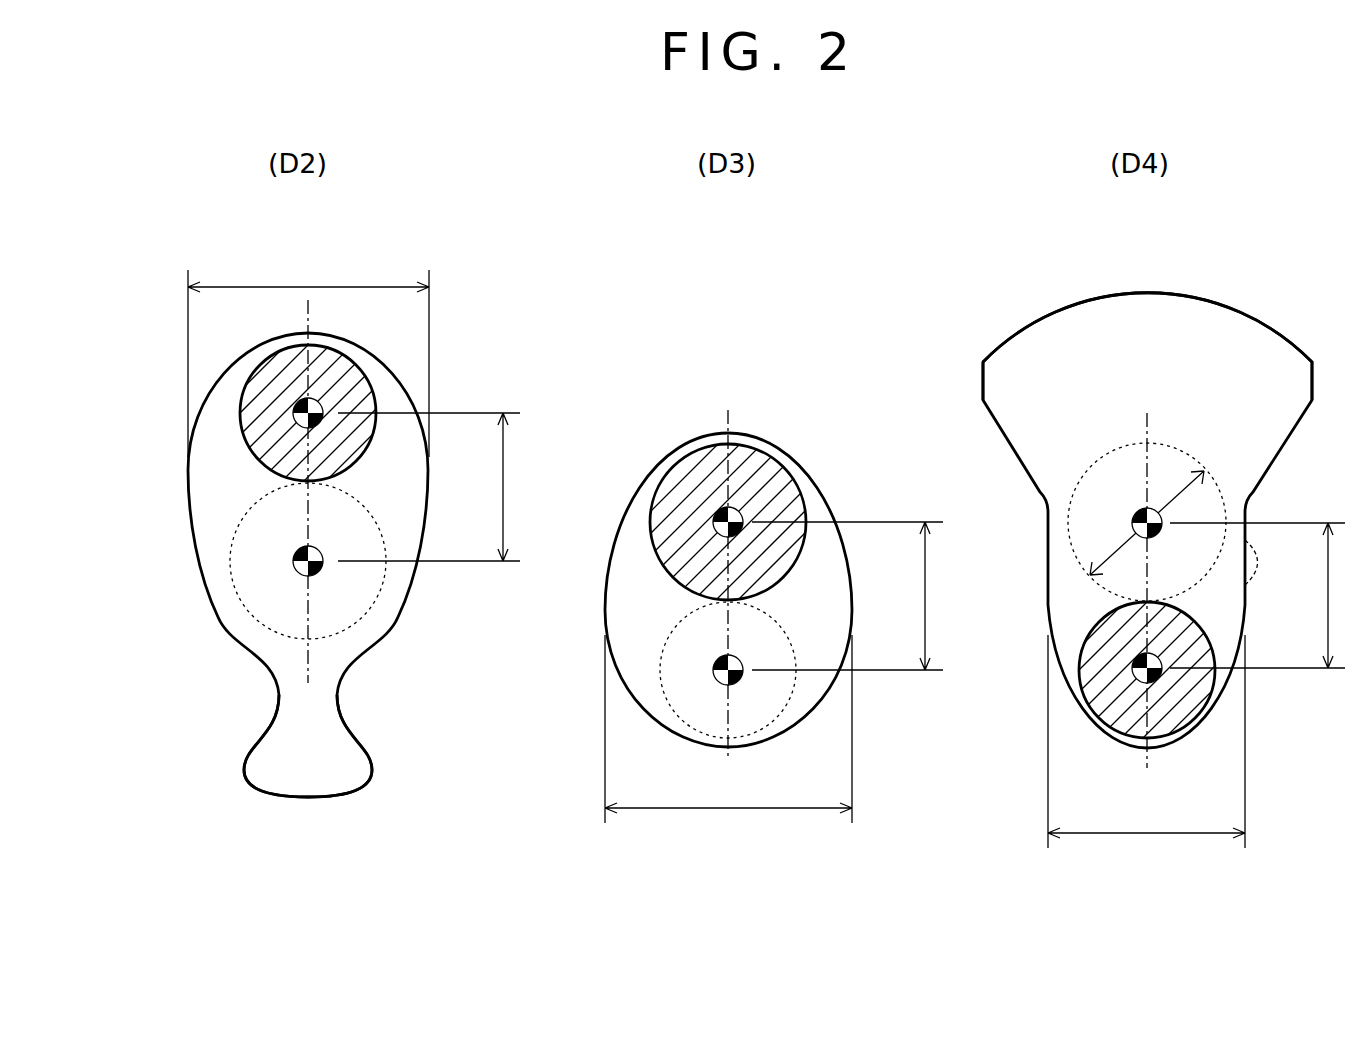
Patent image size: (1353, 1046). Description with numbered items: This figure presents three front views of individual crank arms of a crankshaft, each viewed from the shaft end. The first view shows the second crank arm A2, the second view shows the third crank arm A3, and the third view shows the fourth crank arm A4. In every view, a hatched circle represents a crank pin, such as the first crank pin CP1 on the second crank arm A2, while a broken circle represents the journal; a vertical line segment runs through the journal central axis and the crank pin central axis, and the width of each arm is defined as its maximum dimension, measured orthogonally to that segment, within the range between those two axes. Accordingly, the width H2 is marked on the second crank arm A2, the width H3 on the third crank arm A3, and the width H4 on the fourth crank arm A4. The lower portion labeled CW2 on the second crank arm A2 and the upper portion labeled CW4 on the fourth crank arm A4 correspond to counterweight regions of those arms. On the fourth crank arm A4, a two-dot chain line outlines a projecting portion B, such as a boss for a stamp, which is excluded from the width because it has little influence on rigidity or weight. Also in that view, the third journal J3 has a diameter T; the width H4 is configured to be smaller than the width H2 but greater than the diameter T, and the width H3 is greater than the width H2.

The second crank arm A2 is at (195, 558).
The third crank arm A3 is at (606, 562).
The fourth crank arm A4 is at (1047, 570).
The counterweight (second) CW2 is at (308, 797).
The counterweight (fourth) CW4 is at (1132, 293).
The first crank pin CP1 is at (348, 347).
The third journal J3 is at (1067, 490).
The diameter of the third journal T is at (1120, 530).
The projecting portion B is at (1262, 575).
The width of the second crank arm H2 is at (308, 358).
The width of the third crank arm H3 is at (728, 736).
The width of the fourth crank arm H4 is at (1146, 747).